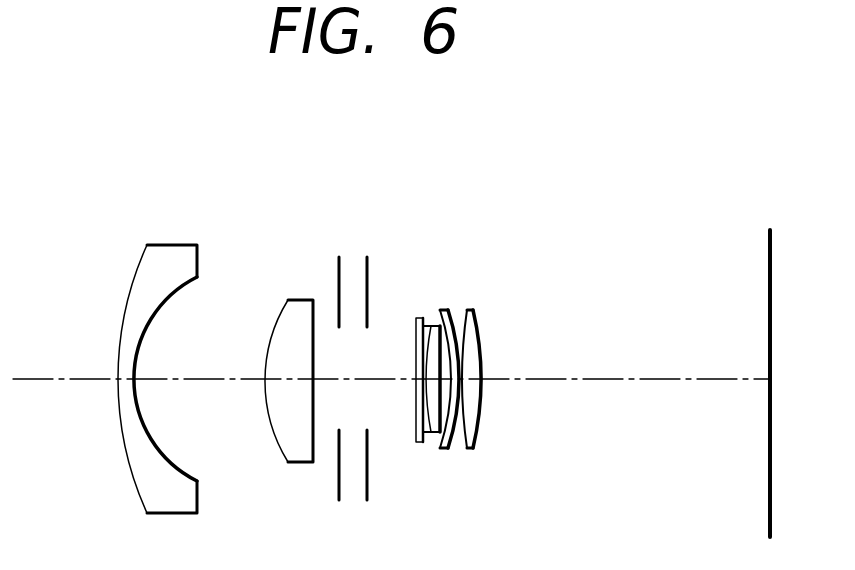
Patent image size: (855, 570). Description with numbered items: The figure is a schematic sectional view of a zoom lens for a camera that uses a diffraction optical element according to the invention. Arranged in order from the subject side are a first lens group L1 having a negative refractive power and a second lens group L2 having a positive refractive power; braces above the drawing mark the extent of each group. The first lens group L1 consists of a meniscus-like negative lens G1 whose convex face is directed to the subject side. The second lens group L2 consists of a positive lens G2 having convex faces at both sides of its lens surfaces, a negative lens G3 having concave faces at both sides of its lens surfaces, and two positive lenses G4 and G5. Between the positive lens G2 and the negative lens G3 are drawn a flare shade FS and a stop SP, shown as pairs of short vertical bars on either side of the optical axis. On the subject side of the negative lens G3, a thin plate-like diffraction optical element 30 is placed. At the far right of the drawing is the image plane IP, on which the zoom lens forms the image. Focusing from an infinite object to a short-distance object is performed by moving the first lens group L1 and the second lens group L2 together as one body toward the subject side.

The first lens group L1 is at (228, 160).
The second lens group L2 is at (508, 160).
The meniscus-like negative lens G1 is at (170, 252).
The positive lens G2 is at (303, 302).
The negative lens G3 is at (428, 322).
The positive lens G4 is at (447, 310).
The positive lens G5 is at (476, 312).
The flare shade FS is at (347, 257).
The stop SP is at (375, 257).
The diffraction optical element 30 is at (415, 440).
The image plane IP is at (772, 250).